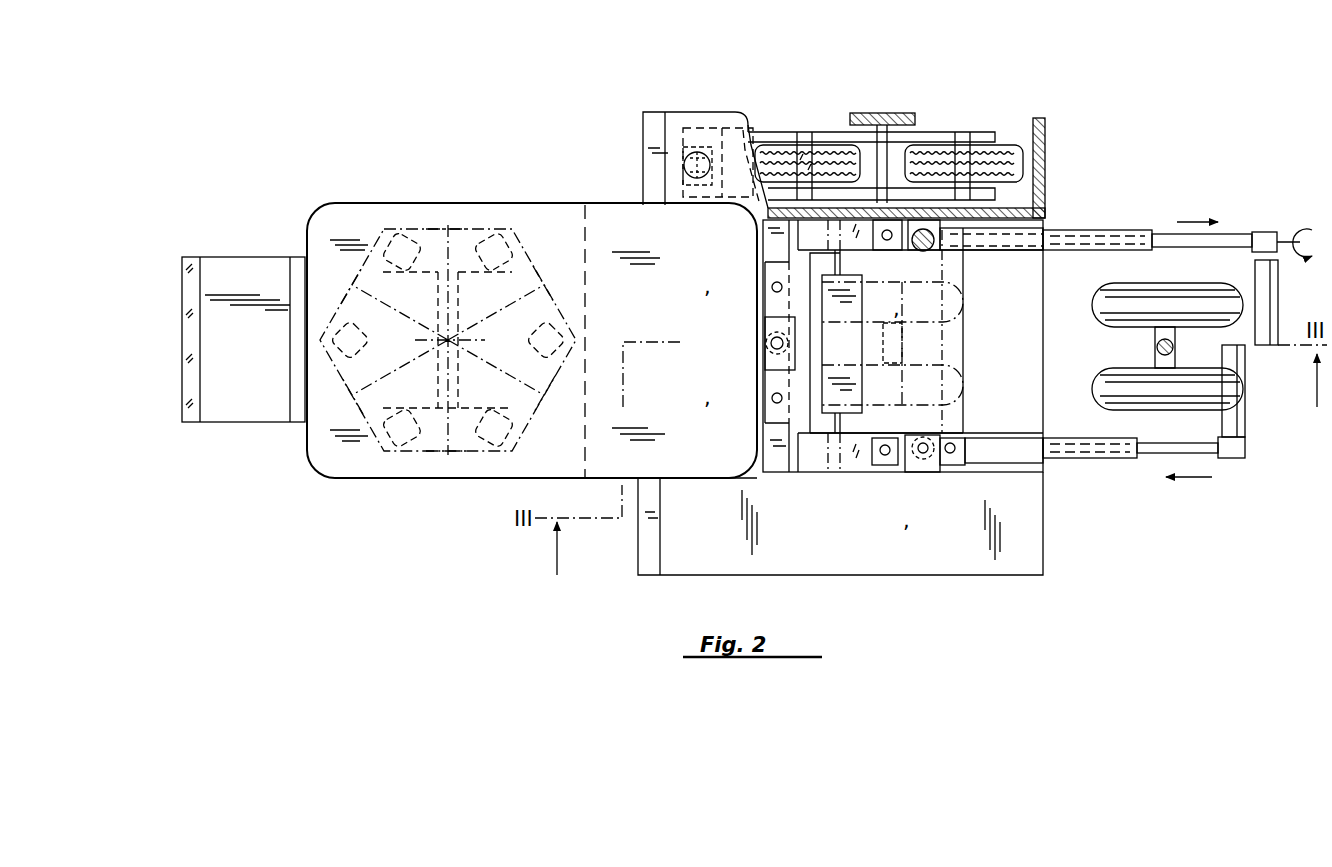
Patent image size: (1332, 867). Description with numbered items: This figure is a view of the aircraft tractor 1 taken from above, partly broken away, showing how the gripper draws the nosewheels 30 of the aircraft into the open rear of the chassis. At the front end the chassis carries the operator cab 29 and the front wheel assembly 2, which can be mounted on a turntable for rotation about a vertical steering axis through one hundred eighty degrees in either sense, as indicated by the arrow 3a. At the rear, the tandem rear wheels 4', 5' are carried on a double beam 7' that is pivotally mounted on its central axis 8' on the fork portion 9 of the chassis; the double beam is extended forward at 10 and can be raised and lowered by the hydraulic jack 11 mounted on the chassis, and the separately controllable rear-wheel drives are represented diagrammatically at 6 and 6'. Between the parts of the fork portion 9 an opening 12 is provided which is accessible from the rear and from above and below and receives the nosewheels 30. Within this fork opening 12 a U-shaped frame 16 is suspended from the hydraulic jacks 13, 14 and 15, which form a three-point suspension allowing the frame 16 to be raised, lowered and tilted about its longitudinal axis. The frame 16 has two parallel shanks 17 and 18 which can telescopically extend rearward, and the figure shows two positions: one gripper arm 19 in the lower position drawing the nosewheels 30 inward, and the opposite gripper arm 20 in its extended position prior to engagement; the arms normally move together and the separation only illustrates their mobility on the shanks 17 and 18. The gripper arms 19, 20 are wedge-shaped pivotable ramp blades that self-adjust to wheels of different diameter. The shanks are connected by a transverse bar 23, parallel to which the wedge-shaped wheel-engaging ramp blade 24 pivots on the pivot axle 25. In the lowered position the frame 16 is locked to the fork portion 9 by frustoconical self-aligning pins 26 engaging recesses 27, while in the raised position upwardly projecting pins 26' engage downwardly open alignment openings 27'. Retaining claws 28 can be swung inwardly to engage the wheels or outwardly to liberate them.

The tractor 1 is at (386, 199).
The front wheel assembly 2 is at (455, 337).
The arrow 3a is at (431, 303).
The rear wheel 4' is at (815, 140).
The rear wheel 5' is at (964, 145).
The rear-wheel drive 6 is at (866, 523).
The rear-wheel drive 6' is at (894, 143).
The double beam 7' is at (807, 122).
The central axis 8' is at (882, 133).
The fork portion of the chassis 9 is at (720, 107).
The forward extension of double beam 10 is at (692, 128).
The hydraulic jack 11 is at (683, 163).
The opening 12 is at (903, 346).
The hydraulic jack 13 is at (768, 345).
The hydraulic jack 14 is at (926, 456).
The hydraulic jack 15 is at (923, 252).
The U-shaped frame 16 is at (848, 476).
The shank 17 is at (1080, 453).
The shank 18 is at (1088, 238).
The gripper arm 19 is at (960, 415).
The gripper arm 20 is at (957, 268).
The transverse bar 23 is at (800, 431).
The ramp blade 24 is at (842, 341).
The pivot axle 25 is at (828, 262).
The pin 26 is at (729, 287).
The recess 27 is at (729, 342).
The pin 26' is at (883, 376).
The alignment opening 27' is at (907, 415).
The retaining claw 28 is at (1027, 446).
The operator cab 29 is at (248, 268).
The nosewheels 30 is at (957, 302).